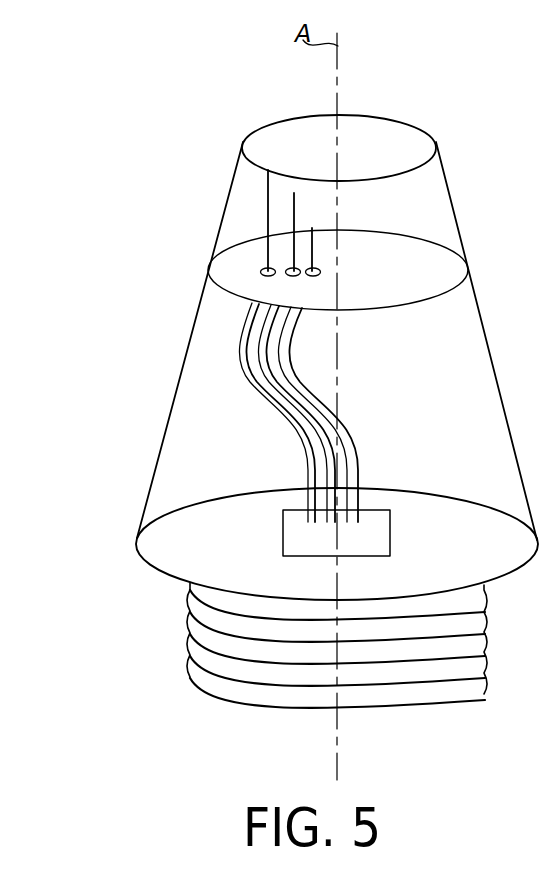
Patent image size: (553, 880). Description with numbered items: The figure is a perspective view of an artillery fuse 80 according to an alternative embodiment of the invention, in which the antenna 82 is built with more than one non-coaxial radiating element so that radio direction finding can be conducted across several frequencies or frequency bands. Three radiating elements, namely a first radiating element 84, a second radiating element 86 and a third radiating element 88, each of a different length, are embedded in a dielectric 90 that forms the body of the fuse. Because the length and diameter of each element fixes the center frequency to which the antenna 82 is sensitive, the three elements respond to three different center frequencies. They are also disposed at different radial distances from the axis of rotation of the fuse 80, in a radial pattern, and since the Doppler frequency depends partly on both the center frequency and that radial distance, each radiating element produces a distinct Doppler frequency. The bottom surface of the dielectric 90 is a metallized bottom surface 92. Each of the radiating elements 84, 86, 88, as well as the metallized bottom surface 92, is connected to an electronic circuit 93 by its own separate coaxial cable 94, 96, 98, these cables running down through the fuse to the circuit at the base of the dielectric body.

The fuse 80 is at (111, 276).
The antenna 82 is at (461, 200).
The first radiating element 84 is at (268, 207).
The second radiating element 86 is at (296, 230).
The third radiating element 88 is at (313, 258).
The dielectric 90 is at (248, 185).
The metallized bottom surface 92 is at (243, 297).
The electronic circuit 93 is at (292, 540).
The coaxial cable 94 is at (252, 392).
The coaxial cable 96 is at (282, 407).
The coaxial cable 98 is at (320, 420).